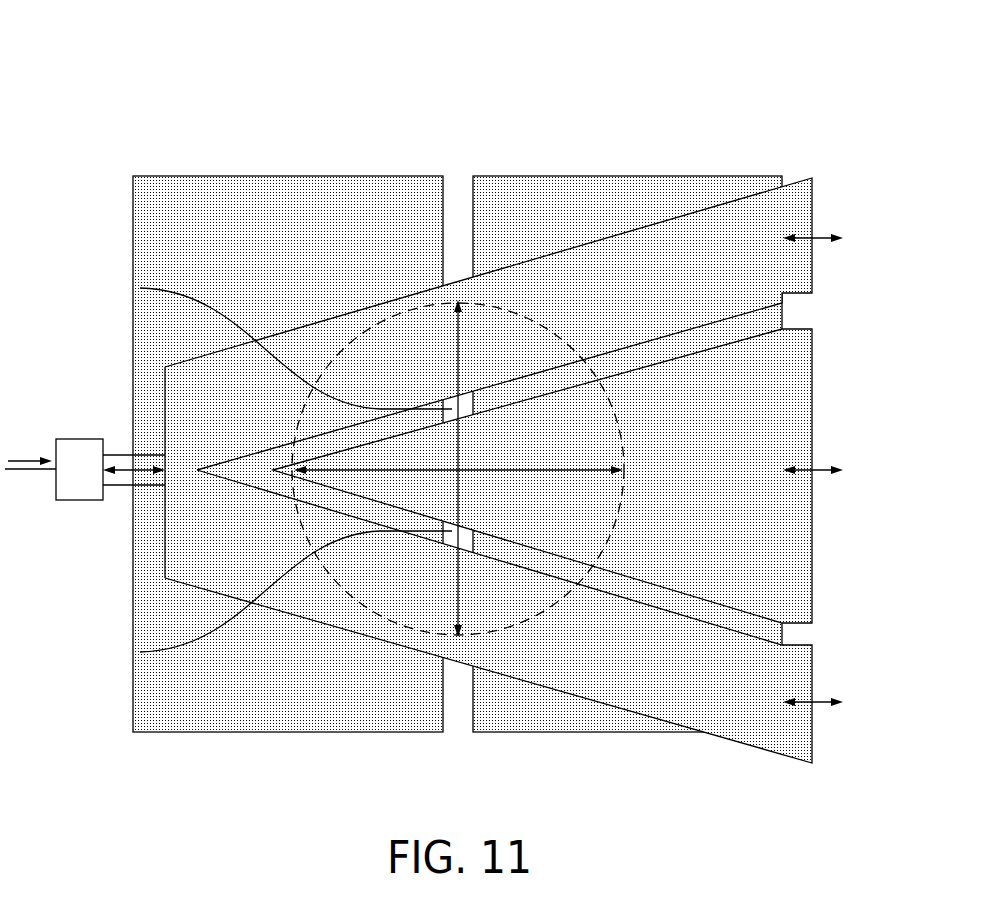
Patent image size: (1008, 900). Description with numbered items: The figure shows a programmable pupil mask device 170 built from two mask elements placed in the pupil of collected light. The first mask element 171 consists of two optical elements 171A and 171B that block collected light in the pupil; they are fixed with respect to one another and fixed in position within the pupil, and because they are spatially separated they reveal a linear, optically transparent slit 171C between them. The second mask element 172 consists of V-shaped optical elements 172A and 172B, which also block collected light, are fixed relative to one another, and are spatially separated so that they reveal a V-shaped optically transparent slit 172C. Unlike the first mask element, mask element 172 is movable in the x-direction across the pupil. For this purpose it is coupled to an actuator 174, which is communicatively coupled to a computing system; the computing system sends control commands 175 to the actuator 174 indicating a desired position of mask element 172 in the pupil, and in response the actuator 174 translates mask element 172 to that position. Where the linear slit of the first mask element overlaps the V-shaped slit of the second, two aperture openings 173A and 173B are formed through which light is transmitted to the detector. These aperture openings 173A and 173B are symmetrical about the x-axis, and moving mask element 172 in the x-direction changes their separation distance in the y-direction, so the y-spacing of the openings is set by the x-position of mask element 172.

The programmable pupil mask device 170 is at (105, 72).
The mask element 171 is at (779, 118).
The optical element 171A is at (288, 454).
The optical element 171B is at (627, 454).
The linear optically transparent slit 171C is at (457, 196).
The mask element 172 is at (545, 470).
The V-shaped optical element 172A is at (488, 470).
The V-shaped optical element 172B is at (542, 476).
The V-shaped optically transparent slit 172C is at (790, 310).
The aperture opening 173A is at (140, 288).
The aperture opening 173B is at (140, 652).
The actuator 174 is at (78, 438).
The control commands 175 is at (25, 460).